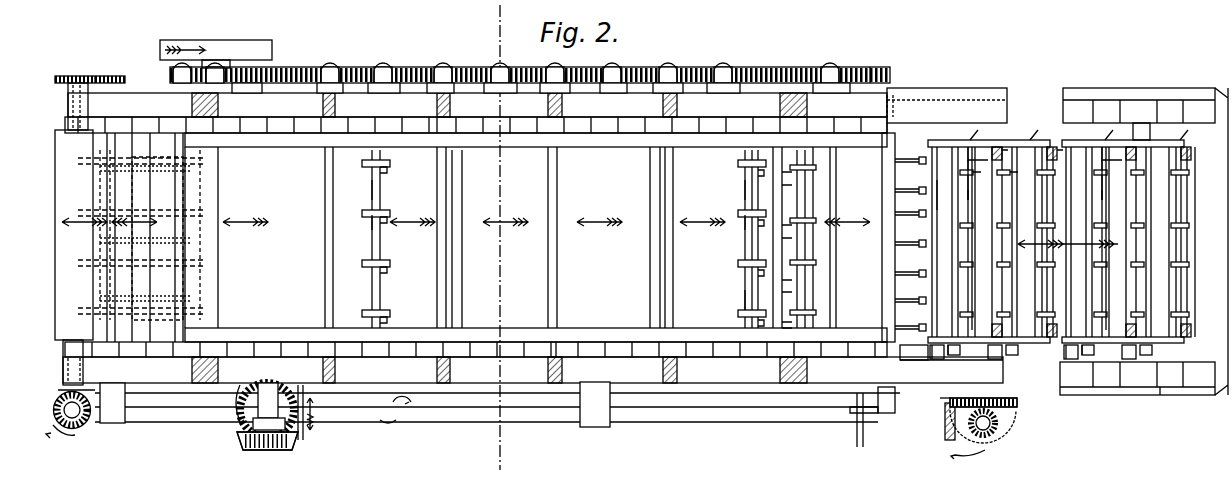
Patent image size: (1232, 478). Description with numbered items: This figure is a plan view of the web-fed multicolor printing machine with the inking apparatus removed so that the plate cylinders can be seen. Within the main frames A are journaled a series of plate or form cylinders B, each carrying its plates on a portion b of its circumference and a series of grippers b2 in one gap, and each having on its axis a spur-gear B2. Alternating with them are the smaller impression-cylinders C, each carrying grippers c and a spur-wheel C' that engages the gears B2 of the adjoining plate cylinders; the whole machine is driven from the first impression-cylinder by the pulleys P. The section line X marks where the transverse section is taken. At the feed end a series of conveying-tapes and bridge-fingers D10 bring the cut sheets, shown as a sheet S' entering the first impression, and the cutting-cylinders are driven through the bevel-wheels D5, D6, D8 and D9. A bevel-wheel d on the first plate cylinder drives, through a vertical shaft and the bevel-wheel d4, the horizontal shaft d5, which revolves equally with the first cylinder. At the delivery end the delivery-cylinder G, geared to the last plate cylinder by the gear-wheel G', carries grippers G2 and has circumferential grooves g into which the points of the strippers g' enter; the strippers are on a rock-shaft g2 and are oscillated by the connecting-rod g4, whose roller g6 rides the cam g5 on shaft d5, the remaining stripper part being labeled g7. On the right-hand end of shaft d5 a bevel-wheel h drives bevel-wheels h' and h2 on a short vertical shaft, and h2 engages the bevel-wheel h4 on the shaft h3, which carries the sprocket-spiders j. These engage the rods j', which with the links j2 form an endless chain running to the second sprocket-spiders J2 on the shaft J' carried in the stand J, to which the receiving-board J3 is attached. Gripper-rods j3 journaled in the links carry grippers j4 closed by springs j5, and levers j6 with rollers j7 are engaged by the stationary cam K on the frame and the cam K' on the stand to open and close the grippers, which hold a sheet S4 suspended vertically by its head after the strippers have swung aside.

The main frames A is at (535, 235).
The plate or form cylinders B is at (393, 237).
The spur-gear B2 is at (767, 72).
The impression-cylinders C is at (476, 237).
The grippers c is at (501, 237).
The spur-wheel C' is at (201, 68).
The pulleys P is at (216, 50).
The plate-carrying portion of cylinder periphery b is at (62, 76).
The grippers b2 is at (114, 78).
The delivery-cylinder G is at (847, 237).
The gear-wheel G' is at (868, 68).
The grippers G2 is at (802, 237).
The circumferential depressions or grooves g is at (785, 253).
The strippers g' is at (904, 237).
The rock-shaft g2 is at (891, 136).
The connecting-rod g4 is at (888, 400).
The cam g5 is at (867, 421).
The roller g6 is at (856, 415).
The clamp g7 is at (785, 284).
The section line X is at (487, 238).
The bevel-wheel D5 is at (74, 234).
The bevel-wheel D6 is at (74, 419).
The bevel-wheel D8 is at (145, 233).
The bevel-wheel D9 is at (71, 388).
The conveying-tapes and bridge-fingers D10 is at (141, 237).
The sheet S' is at (150, 235).
The sheet S4 is at (926, 200).
The bevel-wheel h is at (942, 404).
The bevel-wheel h' is at (976, 431).
The bevel-wheel h2 is at (562, 239).
The shaft h3 is at (552, 247).
The bevel-wheel h4 is at (552, 222).
The bevel-wheel d is at (265, 410).
The bevel gear a is at (275, 447).
The bevel-wheel d4 is at (309, 413).
The horizontal shaft d5 is at (423, 418).
The stand J is at (1144, 241).
The shaft J' is at (978, 250).
The sprocket-spiders J2 is at (1137, 249).
The receiving-board J3 is at (1108, 242).
The sprocket-spiders j is at (1049, 250).
The rods j' is at (1027, 264).
The links j2 is at (1081, 131).
The gripper-rods j3 is at (1085, 193).
The grippers j4 is at (1090, 221).
The springs j5 is at (1084, 148).
The levers j6 is at (1040, 352).
The roller j7 is at (1060, 351).
The stationary cam K is at (951, 368).
The cam K' is at (1166, 379).